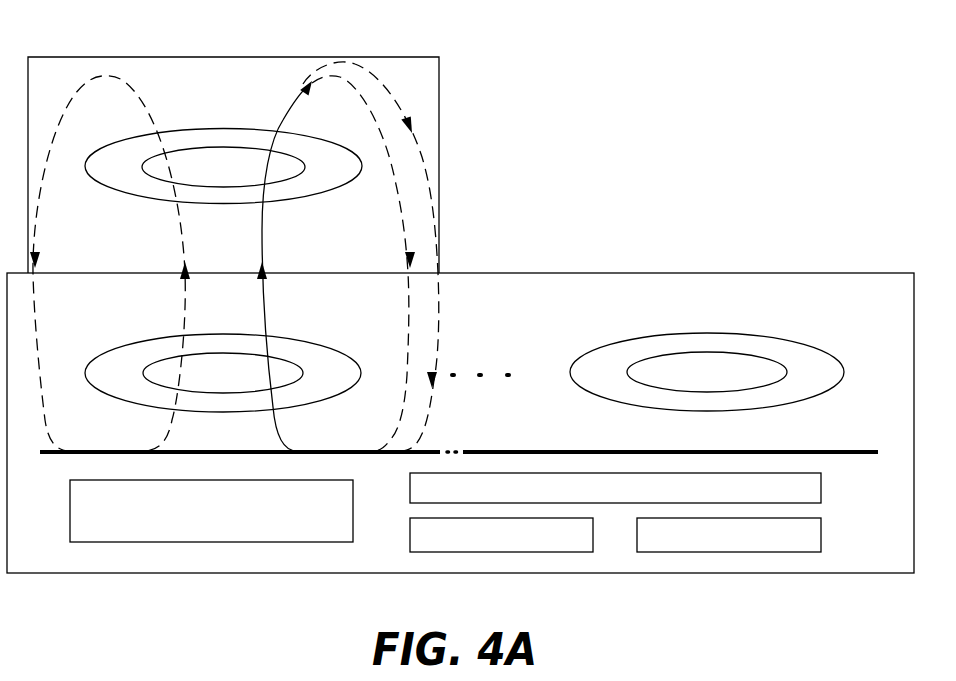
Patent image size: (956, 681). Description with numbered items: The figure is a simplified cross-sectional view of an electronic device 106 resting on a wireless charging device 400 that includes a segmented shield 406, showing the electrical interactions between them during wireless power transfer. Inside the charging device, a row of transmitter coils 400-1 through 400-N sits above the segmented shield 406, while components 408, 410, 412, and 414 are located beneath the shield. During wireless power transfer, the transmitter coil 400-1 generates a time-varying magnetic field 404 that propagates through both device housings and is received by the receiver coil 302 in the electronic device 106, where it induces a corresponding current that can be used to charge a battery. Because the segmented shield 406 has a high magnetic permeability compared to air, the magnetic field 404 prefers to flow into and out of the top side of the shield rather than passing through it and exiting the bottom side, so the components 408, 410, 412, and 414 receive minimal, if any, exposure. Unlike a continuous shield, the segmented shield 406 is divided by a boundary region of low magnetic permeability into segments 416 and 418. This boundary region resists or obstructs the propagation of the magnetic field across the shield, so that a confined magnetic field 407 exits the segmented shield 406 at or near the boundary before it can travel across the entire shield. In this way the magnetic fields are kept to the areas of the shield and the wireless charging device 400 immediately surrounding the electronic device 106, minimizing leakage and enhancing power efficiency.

The electronic device 106 is at (183, 57).
The confined magnetic field 407 is at (388, 85).
The receiver coil 302 is at (294, 202).
The transmitter coil 400-1 is at (318, 347).
The transmitter coil 400-N is at (775, 343).
The time-varying magnetic field 404 is at (42, 383).
The segmented shield 406 is at (860, 472).
The segment 416 is at (63, 457).
The segment 418 is at (843, 449).
The component 408 is at (211, 511).
The component 410 is at (615, 488).
The component 412 is at (501, 535).
The component 414 is at (729, 535).
The wireless charging device 400 is at (808, 574).